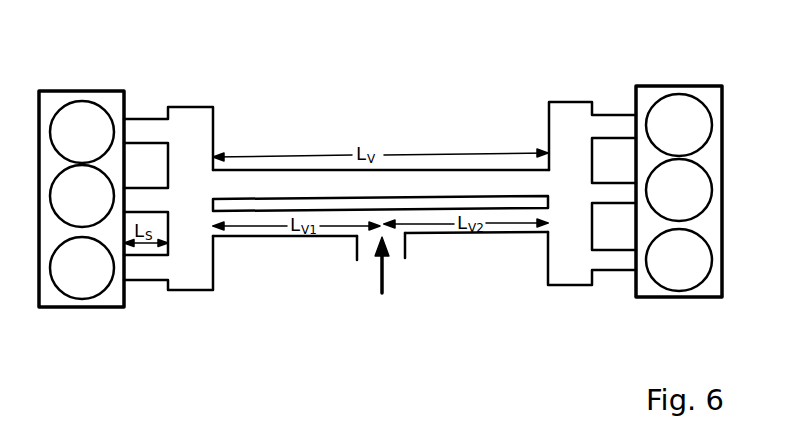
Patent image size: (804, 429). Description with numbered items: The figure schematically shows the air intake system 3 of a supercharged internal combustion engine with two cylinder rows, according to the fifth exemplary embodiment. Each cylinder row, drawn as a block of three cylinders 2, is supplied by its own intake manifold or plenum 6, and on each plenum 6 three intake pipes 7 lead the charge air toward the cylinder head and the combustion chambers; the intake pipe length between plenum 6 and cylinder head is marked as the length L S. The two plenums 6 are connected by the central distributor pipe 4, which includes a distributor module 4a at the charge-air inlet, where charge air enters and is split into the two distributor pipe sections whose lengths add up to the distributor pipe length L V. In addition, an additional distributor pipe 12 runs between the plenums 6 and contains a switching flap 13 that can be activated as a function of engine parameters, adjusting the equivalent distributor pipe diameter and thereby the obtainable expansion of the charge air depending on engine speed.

The cylinder 2 is at (73, 145).
The air intake system 3 is at (363, 102).
The distributor pipe 4 is at (276, 234).
The distributor module 4a is at (393, 233).
The intake manifold or plenum 6 is at (187, 118).
The intake pipe 7 is at (140, 129).
The additional distributor pipe 12 is at (264, 182).
The switching flap 13 is at (389, 180).